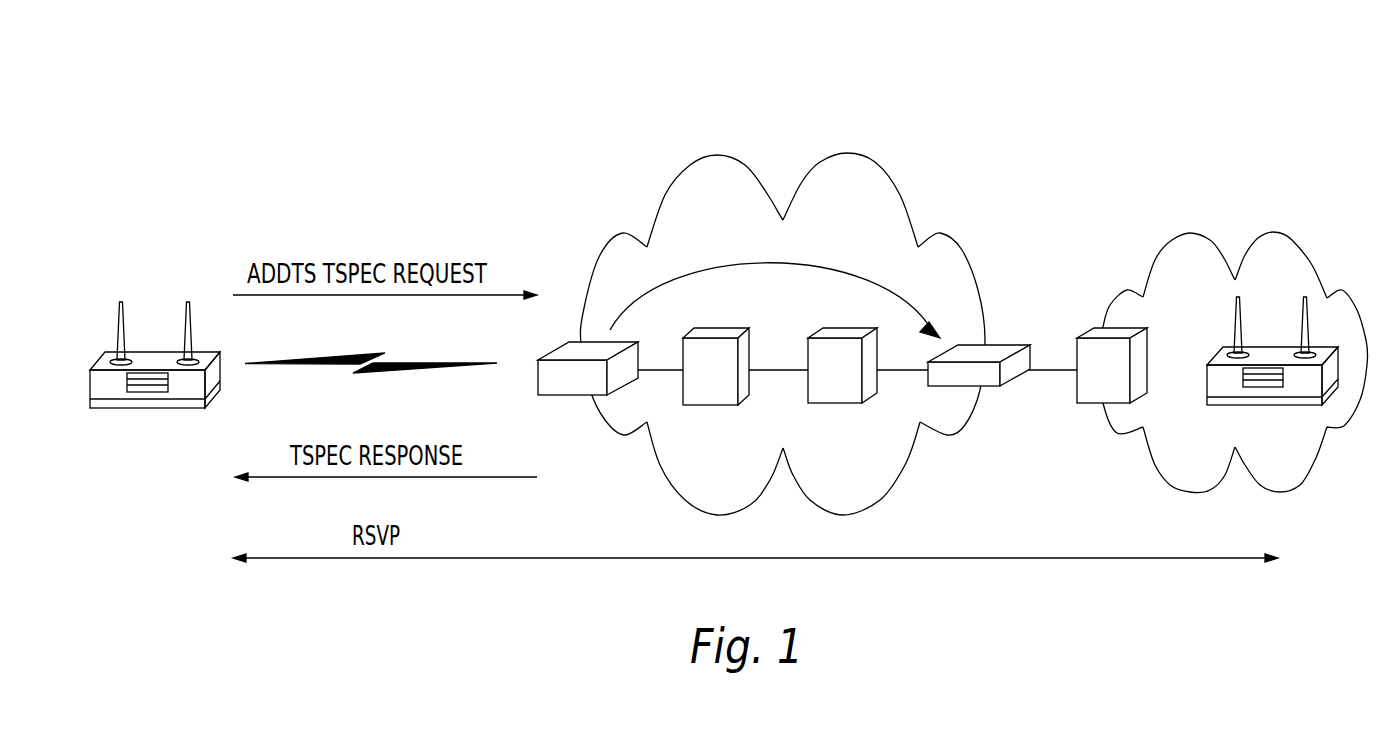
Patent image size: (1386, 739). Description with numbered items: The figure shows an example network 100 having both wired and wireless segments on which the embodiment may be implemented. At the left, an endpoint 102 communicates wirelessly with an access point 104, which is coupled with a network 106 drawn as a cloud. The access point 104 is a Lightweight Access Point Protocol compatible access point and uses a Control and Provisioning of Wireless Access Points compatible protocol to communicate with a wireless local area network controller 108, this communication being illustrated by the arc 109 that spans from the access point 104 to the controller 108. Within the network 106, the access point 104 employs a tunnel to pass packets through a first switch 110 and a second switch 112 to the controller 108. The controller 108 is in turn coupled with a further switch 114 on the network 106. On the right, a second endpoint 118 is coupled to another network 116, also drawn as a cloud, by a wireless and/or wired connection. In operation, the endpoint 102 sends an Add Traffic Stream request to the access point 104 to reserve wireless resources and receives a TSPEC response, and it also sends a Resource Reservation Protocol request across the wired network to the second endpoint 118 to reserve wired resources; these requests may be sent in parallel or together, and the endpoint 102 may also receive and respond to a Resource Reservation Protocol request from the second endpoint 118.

The network 100 is at (248, 112).
The endpoint 102 is at (165, 412).
The access point 104 is at (565, 388).
The network 106 is at (698, 158).
The wireless local area network controller 108 is at (1015, 385).
The CAPWAP communication 109 is at (800, 265).
The switch 110 is at (707, 388).
The switch 112 is at (835, 390).
The switch 114 is at (1087, 328).
The network 116 is at (1292, 237).
The second endpoint 118 is at (1253, 405).